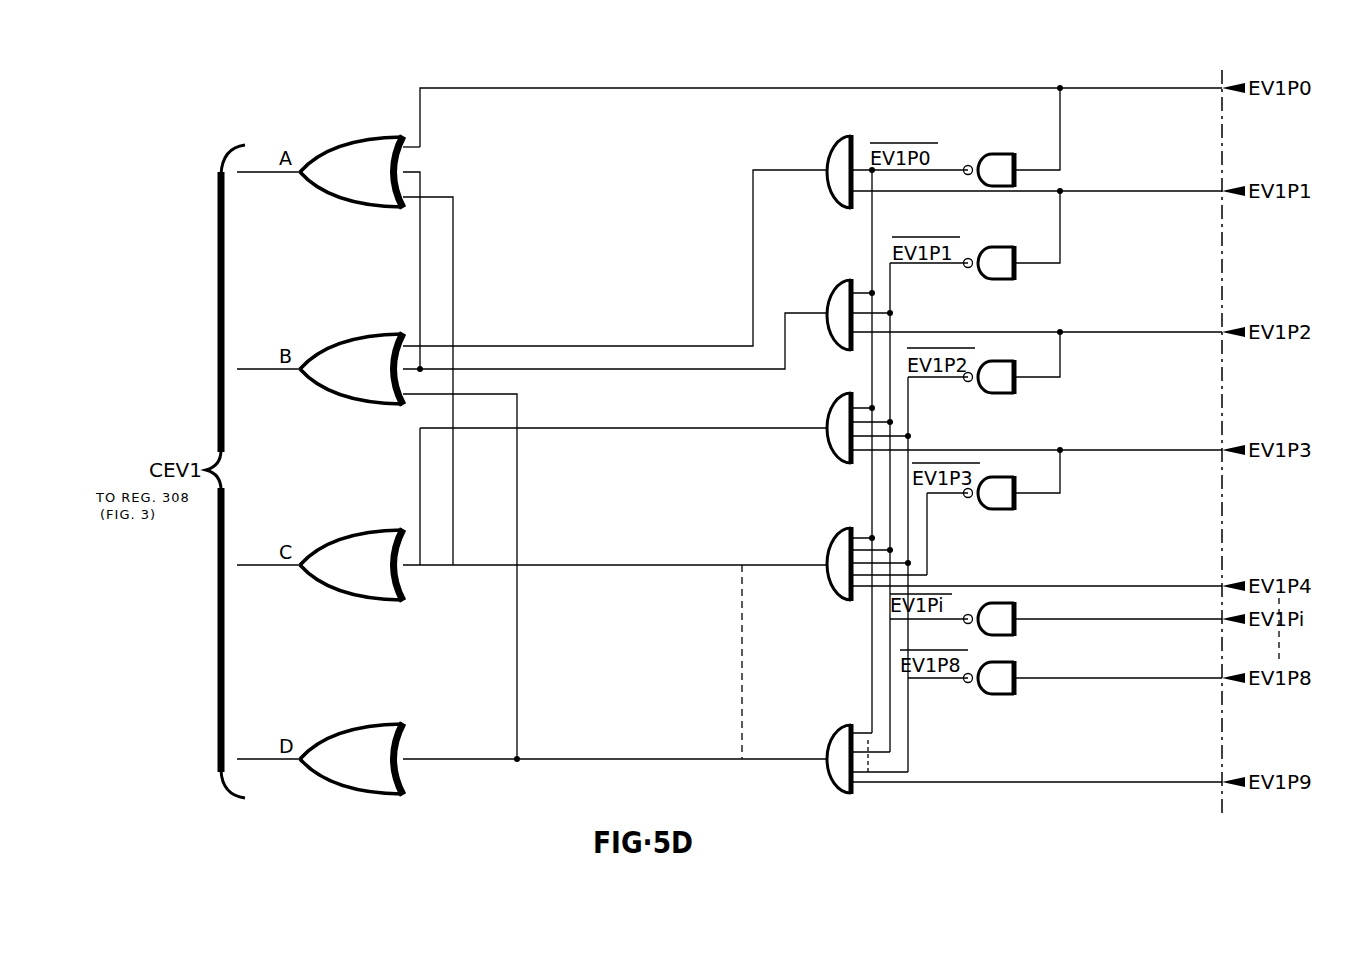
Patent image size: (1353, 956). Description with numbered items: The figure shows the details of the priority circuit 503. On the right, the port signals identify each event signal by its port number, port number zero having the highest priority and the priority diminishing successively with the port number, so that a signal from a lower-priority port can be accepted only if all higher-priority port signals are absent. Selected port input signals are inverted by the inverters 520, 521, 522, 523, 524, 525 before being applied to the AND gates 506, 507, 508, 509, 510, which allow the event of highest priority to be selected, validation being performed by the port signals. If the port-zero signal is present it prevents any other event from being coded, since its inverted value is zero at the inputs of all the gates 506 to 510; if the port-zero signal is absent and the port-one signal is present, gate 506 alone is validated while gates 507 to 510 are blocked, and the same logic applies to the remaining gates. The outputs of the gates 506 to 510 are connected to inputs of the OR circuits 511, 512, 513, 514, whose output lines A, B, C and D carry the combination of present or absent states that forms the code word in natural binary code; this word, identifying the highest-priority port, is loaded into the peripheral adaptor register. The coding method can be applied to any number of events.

The priority circuit 503 is at (821, 106).
The AND gate 506 is at (840, 180).
The AND gate 507 is at (840, 321).
The AND gate 508 is at (840, 438).
The AND gate 509 is at (840, 571).
The AND gate 510 is at (840, 768).
The OR circuit 511 is at (363, 198).
The OR circuit 512 is at (363, 395).
The OR circuit 513 is at (360, 586).
The OR circuit 514 is at (360, 782).
The inverter 520 is at (1000, 163).
The inverter 521 is at (1000, 257).
The inverter 522 is at (1000, 371).
The inverter 523 is at (1000, 490).
The inverter 524 is at (1003, 615).
The inverter 525 is at (1003, 674).